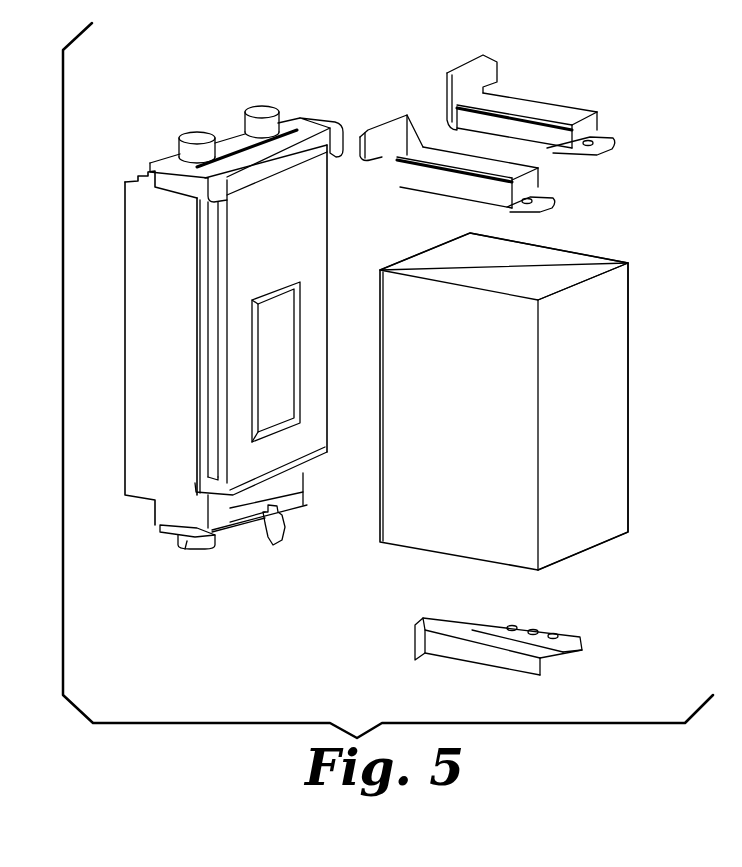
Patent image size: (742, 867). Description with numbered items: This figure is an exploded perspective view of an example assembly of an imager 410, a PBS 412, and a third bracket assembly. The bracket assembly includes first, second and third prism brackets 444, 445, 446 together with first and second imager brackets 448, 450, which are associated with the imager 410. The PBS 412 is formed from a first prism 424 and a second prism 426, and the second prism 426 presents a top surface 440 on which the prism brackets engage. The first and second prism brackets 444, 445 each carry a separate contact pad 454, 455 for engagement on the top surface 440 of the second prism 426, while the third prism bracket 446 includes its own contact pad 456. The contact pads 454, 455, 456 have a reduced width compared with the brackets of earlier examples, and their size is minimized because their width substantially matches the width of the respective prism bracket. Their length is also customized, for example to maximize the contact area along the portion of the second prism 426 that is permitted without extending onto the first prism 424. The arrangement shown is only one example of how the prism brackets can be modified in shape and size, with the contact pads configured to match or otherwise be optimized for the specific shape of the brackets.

The imager 410 is at (126, 474).
The PBS 412 is at (632, 381).
The first prism 424 is at (438, 253).
The second prism 426 is at (610, 457).
The top surface 440 is at (557, 273).
The first prism bracket 444 is at (553, 103).
The second prism bracket 445 is at (532, 172).
The third prism bracket 446 is at (487, 667).
The first imager bracket 448 is at (288, 120).
The second imager bracket 450 is at (188, 542).
The contact pad 454 is at (577, 162).
The contact pad 455 is at (510, 207).
The contact pad 456 is at (552, 633).